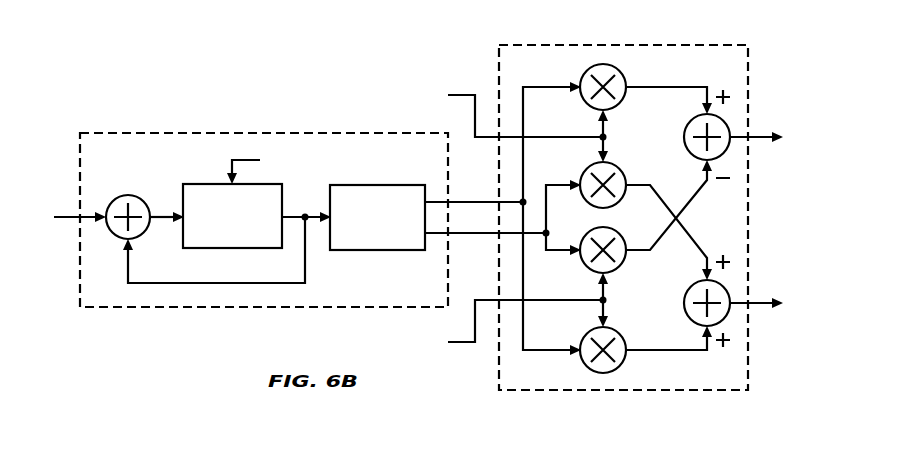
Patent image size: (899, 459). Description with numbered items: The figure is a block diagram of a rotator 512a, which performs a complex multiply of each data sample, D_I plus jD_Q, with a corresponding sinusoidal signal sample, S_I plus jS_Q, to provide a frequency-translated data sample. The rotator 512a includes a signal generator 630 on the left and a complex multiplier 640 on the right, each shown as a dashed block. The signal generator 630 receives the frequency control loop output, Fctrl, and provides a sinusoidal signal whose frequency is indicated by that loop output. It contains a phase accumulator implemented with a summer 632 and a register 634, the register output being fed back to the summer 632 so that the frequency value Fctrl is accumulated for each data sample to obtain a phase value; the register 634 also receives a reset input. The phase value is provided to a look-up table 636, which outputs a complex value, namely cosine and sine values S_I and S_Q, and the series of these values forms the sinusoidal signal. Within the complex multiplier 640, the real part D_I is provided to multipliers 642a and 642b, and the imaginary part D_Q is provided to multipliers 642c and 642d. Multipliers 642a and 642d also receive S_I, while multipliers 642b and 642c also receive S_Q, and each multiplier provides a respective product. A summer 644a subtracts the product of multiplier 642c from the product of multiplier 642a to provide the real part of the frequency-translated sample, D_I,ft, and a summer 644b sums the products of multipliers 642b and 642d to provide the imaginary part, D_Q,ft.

The rotator 512a is at (98, 70).
The signal generator 630 is at (262, 133).
The summer 632 is at (122, 194).
The register 634 is at (212, 183).
The look-up table 636 is at (378, 185).
The complex multiplier 640 is at (598, 43).
The multiplier 642a is at (624, 75).
The multiplier 642b is at (624, 172).
The multiplier 642c is at (623, 265).
The multiplier 642d is at (623, 362).
The summer 644a is at (686, 127).
The summer 644b is at (686, 313).